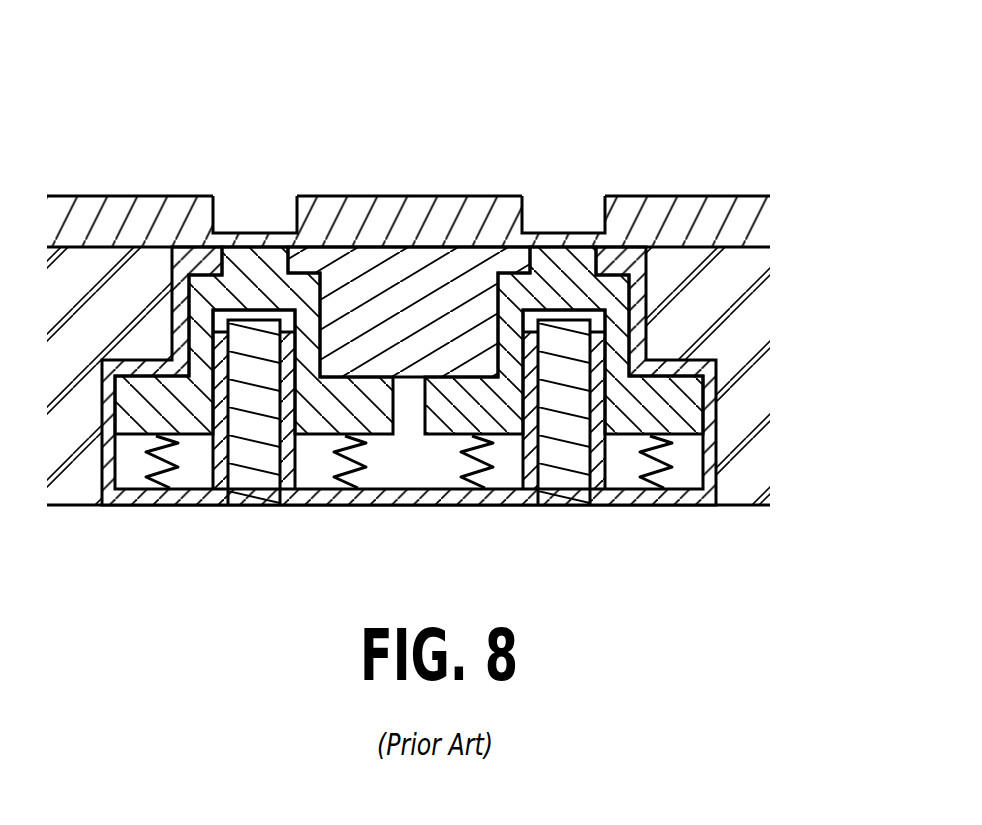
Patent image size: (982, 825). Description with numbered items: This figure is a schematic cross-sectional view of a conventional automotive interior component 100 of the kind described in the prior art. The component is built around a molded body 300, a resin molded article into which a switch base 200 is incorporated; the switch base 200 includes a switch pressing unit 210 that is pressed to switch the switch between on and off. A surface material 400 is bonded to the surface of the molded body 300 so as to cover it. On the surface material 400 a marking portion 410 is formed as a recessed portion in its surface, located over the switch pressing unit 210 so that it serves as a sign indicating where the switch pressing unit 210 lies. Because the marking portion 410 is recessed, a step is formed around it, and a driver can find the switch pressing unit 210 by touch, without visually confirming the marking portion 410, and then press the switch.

The automotive interior component 100 is at (438, 295).
The switch base 200 is at (723, 487).
The switch pressing unit 210 is at (565, 262).
The molded body 300 is at (740, 328).
The surface material 400 is at (92, 202).
The marking portion 410 is at (256, 219).